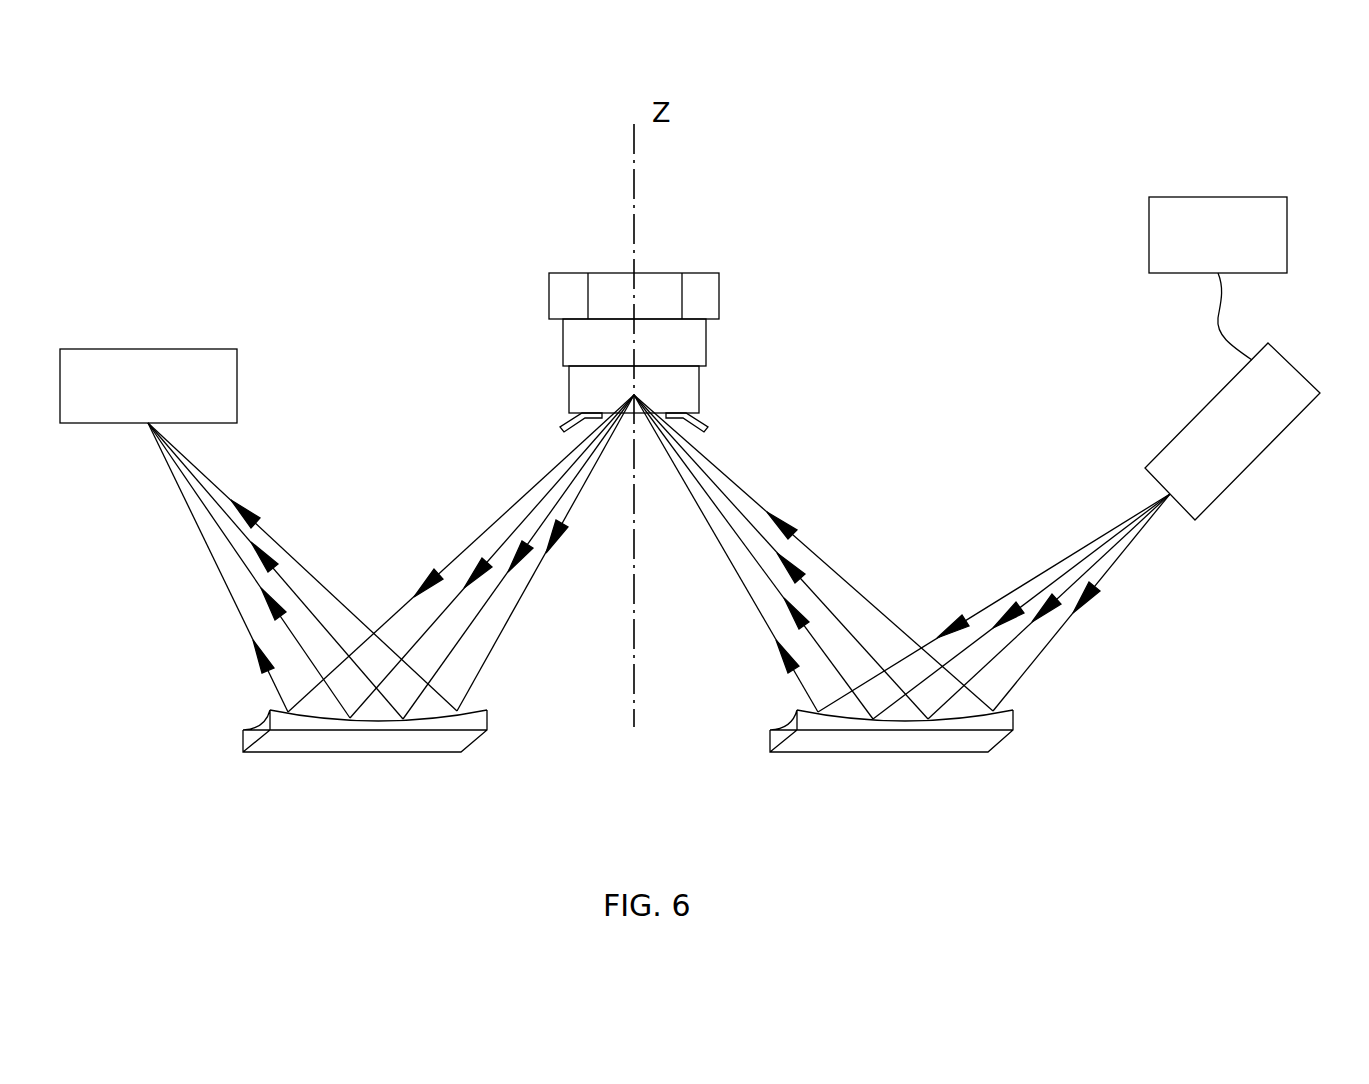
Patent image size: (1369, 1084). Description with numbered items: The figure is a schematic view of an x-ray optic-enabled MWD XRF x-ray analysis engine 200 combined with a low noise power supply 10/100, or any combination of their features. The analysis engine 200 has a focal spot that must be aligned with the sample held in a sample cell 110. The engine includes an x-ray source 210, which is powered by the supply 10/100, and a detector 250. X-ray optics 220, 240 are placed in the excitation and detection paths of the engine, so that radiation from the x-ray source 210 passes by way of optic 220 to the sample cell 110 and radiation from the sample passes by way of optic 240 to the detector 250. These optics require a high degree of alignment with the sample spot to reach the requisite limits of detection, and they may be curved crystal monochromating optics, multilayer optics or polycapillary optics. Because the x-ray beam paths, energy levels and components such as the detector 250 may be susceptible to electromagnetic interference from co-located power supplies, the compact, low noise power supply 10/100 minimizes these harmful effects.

The x-ray analysis engine 200 is at (593, 740).
The sample cell 110 is at (788, 290).
The detector 250 is at (237, 385).
The x-ray optic 240 is at (301, 745).
The x-ray optic 220 is at (978, 738).
The x-ray source 210 is at (1205, 406).
The power supply 10 is at (1218, 278).
The power supply 100 is at (1251, 244).